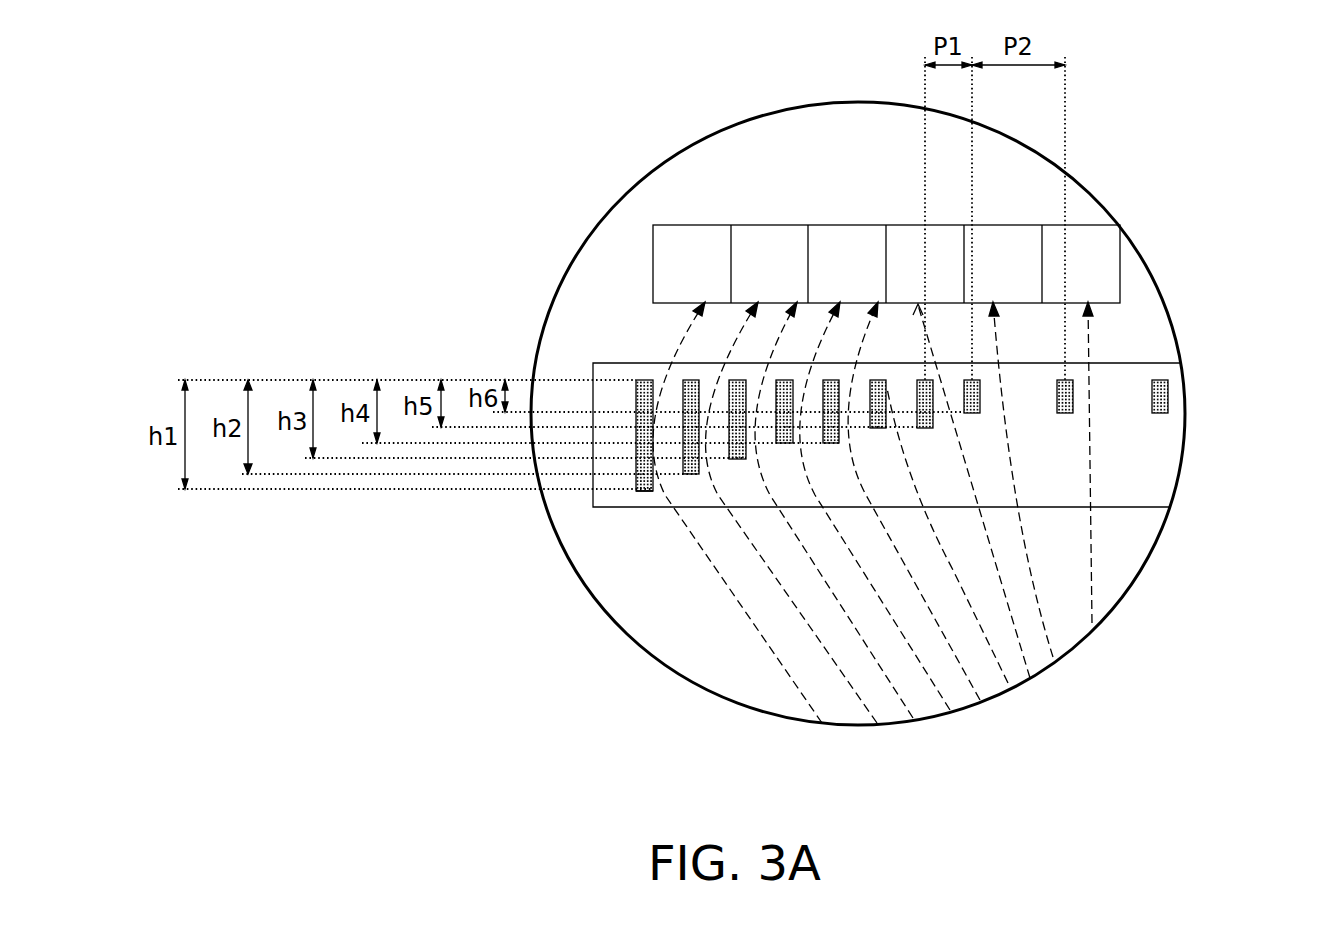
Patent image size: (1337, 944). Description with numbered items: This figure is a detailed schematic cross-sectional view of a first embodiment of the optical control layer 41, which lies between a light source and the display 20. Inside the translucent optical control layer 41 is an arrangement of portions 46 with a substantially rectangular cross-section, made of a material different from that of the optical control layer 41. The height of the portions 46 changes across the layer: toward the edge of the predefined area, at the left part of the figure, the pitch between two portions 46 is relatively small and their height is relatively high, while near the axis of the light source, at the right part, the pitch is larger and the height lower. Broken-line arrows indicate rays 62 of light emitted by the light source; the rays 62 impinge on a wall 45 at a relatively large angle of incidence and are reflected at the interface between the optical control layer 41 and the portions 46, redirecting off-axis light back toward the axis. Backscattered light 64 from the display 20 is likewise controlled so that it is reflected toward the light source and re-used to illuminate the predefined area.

The display 20 is at (1232, 268).
The optical control layer 41 is at (1232, 432).
The wall 45 is at (660, 488).
The portions 46 is at (643, 381).
The rays 62 is at (1043, 621).
The backscattered light 64 is at (895, 342).